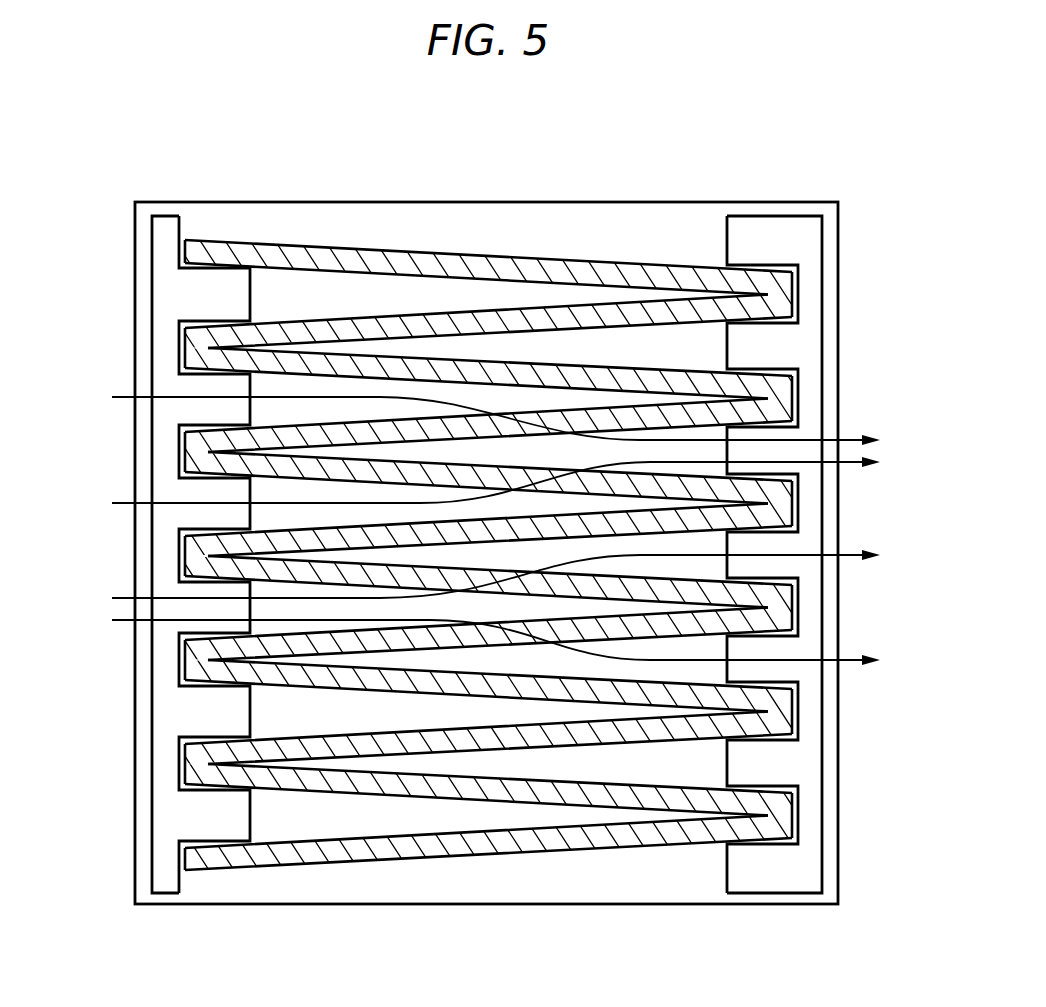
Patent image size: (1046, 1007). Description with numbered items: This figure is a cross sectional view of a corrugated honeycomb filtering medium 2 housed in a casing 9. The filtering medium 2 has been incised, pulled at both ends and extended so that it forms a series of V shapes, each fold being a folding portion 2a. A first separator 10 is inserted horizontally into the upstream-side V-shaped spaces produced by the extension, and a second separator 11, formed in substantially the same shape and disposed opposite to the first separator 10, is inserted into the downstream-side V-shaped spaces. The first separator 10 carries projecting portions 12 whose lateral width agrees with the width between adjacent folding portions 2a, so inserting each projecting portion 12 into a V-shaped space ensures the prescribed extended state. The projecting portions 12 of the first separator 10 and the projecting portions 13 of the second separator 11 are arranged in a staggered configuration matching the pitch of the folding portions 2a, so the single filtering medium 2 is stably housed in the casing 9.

The corrugated honeycomb filtering medium 2 is at (523, 530).
The folding portion (apex portion) 2a is at (182, 452).
The casing (filter case) 9 is at (806, 160).
The first separator 10 is at (146, 554).
The second separator 11 is at (836, 554).
The projecting portion 12 is at (197, 516).
The projecting portion 13 is at (792, 570).